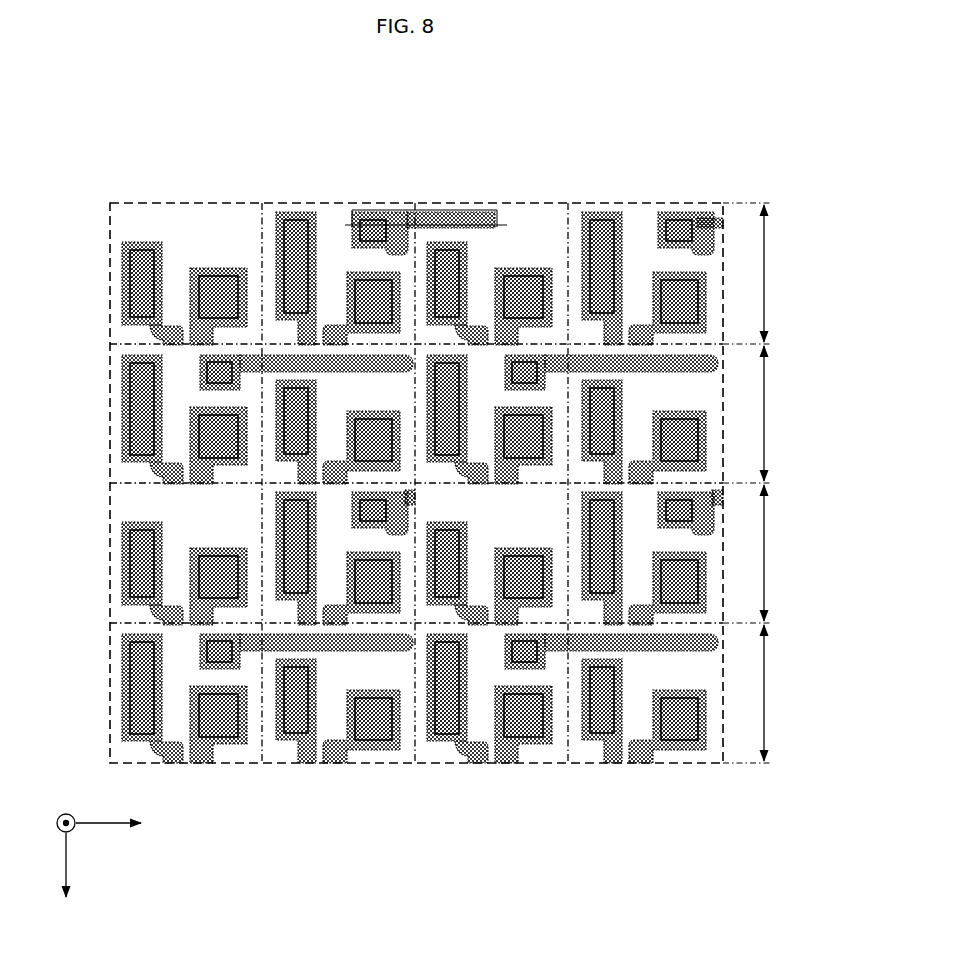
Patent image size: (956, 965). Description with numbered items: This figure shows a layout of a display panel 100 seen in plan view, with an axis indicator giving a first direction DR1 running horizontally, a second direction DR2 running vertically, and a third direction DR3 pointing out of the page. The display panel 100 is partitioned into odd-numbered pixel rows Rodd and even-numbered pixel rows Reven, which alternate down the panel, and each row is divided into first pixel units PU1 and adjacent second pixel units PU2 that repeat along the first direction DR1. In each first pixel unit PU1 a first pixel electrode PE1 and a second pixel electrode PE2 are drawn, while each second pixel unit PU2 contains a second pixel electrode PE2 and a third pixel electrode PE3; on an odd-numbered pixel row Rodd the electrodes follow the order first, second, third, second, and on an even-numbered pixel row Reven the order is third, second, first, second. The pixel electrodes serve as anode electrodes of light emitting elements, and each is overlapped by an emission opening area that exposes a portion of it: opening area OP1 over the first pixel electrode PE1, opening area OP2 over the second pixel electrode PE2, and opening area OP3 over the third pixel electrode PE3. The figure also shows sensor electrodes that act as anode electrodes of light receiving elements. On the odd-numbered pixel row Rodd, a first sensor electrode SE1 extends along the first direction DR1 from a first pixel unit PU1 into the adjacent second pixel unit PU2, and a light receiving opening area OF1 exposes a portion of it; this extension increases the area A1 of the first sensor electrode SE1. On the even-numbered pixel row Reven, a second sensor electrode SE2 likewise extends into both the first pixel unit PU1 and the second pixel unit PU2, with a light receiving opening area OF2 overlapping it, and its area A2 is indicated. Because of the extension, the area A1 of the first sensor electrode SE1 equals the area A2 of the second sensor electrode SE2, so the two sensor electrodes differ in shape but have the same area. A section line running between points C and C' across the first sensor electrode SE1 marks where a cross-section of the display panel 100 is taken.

The display panel 100 is at (684, 149).
The first pixel unit PU1 is at (248, 228).
The second pixel unit PU2 is at (265, 228).
The first pixel electrode PE1 is at (125, 243).
The opening area OP1 is at (150, 251).
The second pixel electrode PE2 is at (197, 270).
The opening area OP2 is at (223, 271).
The third pixel electrode PE3 is at (311, 213).
The opening area OP3 is at (296, 221).
The opening area OF1 is at (370, 222).
The first sensor electrode SE1 is at (400, 220).
The area of the first sensor electrode A1 is at (446, 206).
The line C-C' C is at (423, 197).
The line C- C' is at (506, 192).
The opening area OF2 is at (208, 371).
The second sensor electrode SE2 is at (201, 383).
The area of the second sensor electrode A2 is at (337, 376).
The odd-numbered pixel row Rodd is at (788, 413).
The even-numbered pixel row Reven is at (792, 553).
The first direction DR1 is at (132, 824).
The second direction DR2 is at (69, 880).
The third direction DR3 is at (69, 810).